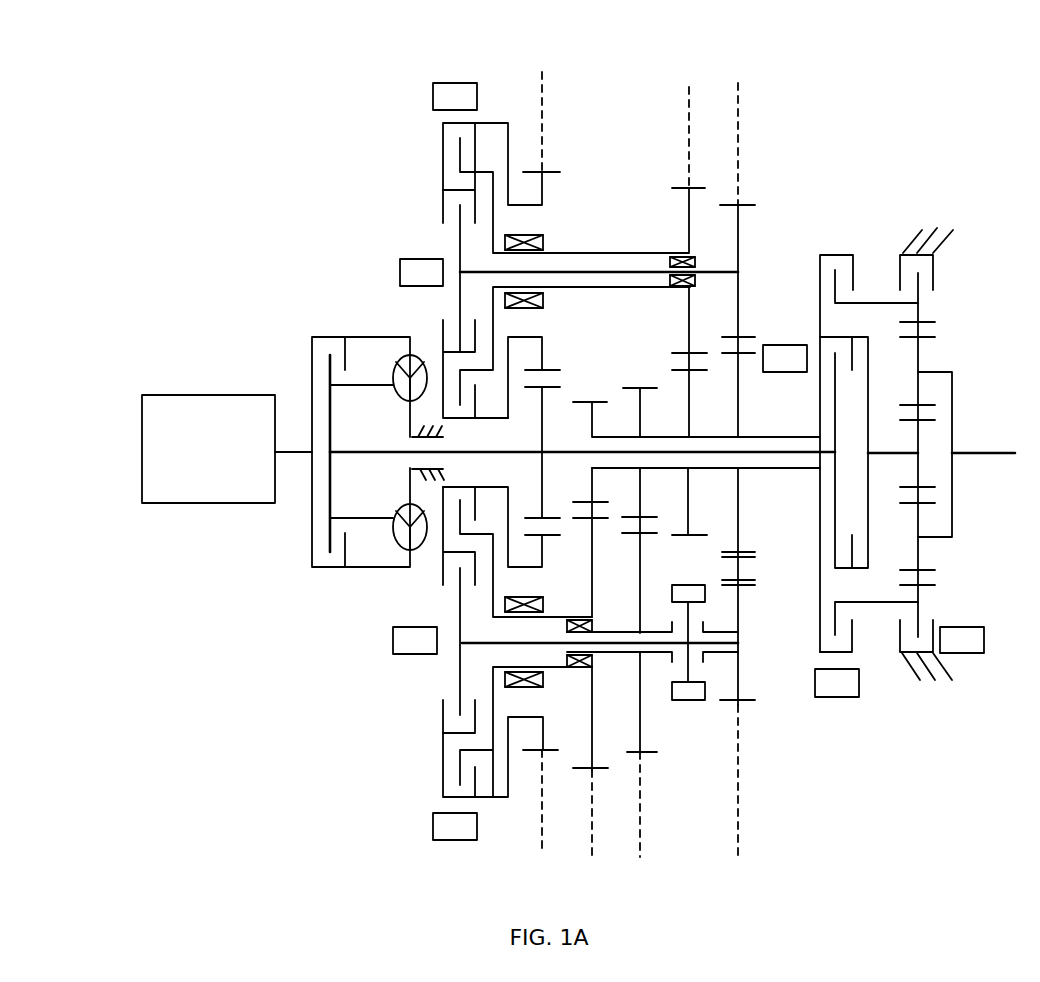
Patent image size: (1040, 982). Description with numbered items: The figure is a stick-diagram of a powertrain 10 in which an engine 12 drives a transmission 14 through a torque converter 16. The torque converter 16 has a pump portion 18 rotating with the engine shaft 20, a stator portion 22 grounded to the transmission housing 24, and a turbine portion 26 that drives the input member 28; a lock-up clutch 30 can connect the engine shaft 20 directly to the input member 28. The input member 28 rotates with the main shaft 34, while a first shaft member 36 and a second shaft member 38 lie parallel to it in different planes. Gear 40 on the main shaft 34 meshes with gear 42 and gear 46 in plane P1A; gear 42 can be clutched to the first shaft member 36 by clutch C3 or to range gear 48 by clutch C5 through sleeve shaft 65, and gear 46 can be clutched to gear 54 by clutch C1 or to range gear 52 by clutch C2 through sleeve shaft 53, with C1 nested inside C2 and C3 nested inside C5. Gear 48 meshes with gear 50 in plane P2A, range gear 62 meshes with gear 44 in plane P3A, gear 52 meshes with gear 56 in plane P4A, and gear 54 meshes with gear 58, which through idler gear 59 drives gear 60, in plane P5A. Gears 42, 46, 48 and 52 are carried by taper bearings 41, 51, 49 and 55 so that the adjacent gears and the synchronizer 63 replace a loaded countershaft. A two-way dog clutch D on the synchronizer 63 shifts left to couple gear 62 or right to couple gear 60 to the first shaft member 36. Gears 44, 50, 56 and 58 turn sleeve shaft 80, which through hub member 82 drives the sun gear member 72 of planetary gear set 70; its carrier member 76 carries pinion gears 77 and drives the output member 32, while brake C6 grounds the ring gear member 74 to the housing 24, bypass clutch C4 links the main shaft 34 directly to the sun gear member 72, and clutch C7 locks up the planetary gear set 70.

The powertrain 10 is at (268, 167).
The engine 12 is at (209, 459).
The transmission 14 is at (388, 278).
The torque converter 16 is at (351, 332).
The pump portion 18 is at (423, 358).
The engine shaft 20 is at (297, 455).
The stator portion 22 is at (407, 395).
The transmission housing 24 is at (412, 467).
The turbine portion 26 is at (395, 368).
The input member 28 is at (513, 452).
The lock-up clutch 30 is at (325, 390).
The output member 32 is at (982, 453).
The main shaft 34 is at (563, 455).
The first shaft member 36 is at (613, 647).
The second shaft member 38 is at (718, 272).
The gear 40 is at (543, 440).
The bearing 41 is at (538, 597).
The gear 42 is at (542, 552).
The gear 44 is at (640, 423).
The gear 46 is at (543, 355).
The range gear 48 is at (595, 537).
The bearing 49 is at (592, 625).
The gear 50 is at (593, 423).
The bearing 51 is at (528, 235).
The range gear 52 is at (683, 227).
The sleeve shaft 53 is at (638, 253).
The range gear 54 is at (738, 238).
The bearing 55 is at (693, 277).
The gear 56 is at (689, 388).
The gear 58 is at (738, 387).
The idler gear 59 is at (740, 567).
The gear 60 is at (738, 603).
The range gear 62 is at (642, 558).
The synchronizer 63 is at (653, 655).
The sleeve shaft 65 is at (558, 672).
The planetary gear set 70 is at (976, 569).
The sun gear member 72 is at (918, 437).
The ring gear member 74 is at (925, 322).
The carrier member 76 is at (935, 372).
The pinion gears 77 is at (910, 350).
The sleeve shaft 80 is at (765, 470).
The hub member 82 is at (868, 510).
The rotating clutch C1 is at (545, 338).
The rotating clutch C2 is at (487, 153).
The rotating clutch C3 is at (492, 570).
The bypass clutch C4 is at (785, 358).
The rotating clutch C5 is at (512, 704).
The brake C6 is at (942, 650).
The lock-up clutch C7 is at (837, 683).
The two-way dog clutch D is at (692, 702).
The plane P1A is at (536, 461).
The plane P2A is at (588, 827).
The plane P3A is at (655, 820).
The plane P4A is at (683, 124).
The plane P5A is at (736, 469).